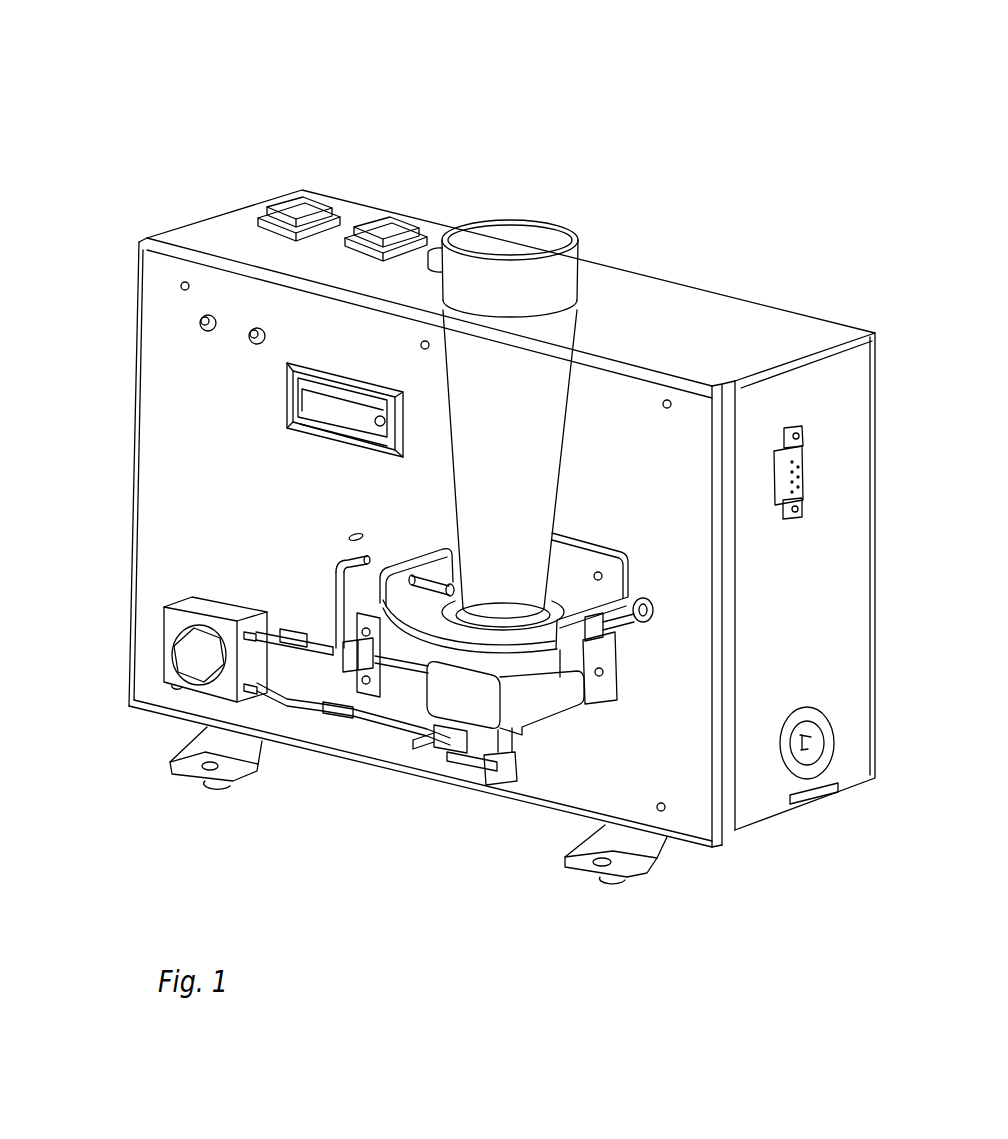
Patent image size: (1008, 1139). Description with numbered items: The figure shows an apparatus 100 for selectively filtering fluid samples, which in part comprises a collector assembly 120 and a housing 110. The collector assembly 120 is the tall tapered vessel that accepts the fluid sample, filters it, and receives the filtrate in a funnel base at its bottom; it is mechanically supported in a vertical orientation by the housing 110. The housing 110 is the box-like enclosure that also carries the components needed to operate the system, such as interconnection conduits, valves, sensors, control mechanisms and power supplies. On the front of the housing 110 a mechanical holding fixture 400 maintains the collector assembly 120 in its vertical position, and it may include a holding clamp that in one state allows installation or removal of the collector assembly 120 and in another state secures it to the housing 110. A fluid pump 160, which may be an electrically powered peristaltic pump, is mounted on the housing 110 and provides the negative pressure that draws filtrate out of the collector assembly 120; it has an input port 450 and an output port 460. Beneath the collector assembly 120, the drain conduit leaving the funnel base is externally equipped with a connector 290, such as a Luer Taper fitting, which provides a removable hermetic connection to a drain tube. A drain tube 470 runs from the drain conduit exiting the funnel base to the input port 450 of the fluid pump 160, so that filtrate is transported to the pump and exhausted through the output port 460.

The apparatus 100 is at (262, 108).
The housing 110 is at (192, 472).
The collector assembly 120 is at (546, 400).
The fluid pump 160 is at (197, 700).
The connector 290 is at (513, 745).
The mechanical holding fixture 400 is at (583, 637).
The input port 450 is at (257, 648).
The output port 460 is at (252, 702).
The drain tube 470 is at (305, 657).